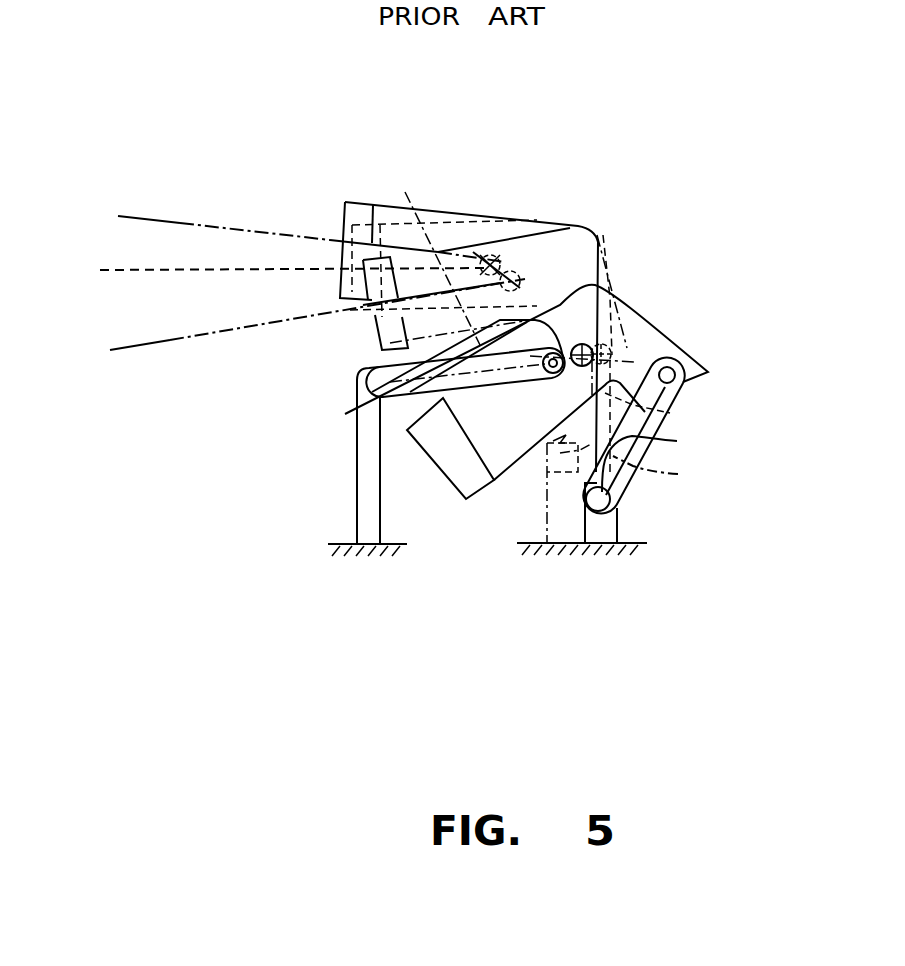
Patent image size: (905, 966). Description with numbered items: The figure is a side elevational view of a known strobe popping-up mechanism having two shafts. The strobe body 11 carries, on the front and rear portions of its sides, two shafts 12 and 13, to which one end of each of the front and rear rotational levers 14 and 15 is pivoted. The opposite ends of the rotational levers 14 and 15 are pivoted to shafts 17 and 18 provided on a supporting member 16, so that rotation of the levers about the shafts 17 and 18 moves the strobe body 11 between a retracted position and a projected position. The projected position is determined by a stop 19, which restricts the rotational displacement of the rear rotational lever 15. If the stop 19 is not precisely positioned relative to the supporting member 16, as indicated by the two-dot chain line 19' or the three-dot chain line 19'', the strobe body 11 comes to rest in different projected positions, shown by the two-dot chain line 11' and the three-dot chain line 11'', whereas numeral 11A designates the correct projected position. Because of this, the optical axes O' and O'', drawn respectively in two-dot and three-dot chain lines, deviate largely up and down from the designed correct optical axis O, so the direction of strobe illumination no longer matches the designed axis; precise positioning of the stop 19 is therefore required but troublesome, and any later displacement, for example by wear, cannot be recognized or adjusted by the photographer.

The designed correct optical axis O is at (295, 293).
The optical axis (two-dot chain line) O' is at (311, 200).
The optical axis (three-dot chain line) O'' is at (317, 343).
The strobe body 11 is at (504, 406).
The strobe body position (two-dot chain line) 11' is at (486, 306).
The correct projected position 11A is at (510, 218).
The strobe body position (three-dot chain line) 11'' is at (526, 338).
The shaft 12 is at (543, 378).
The shaft 13 is at (697, 374).
The front rotational lever 14 is at (409, 452).
The rear rotational lever 15 is at (662, 411).
The supporting member 16 is at (352, 553).
The shaft 17 is at (372, 394).
The shaft 18 is at (617, 512).
The stop 19 is at (654, 462).
The stop position (two-dot chain line) 19' is at (663, 472).
The stop position (three-dot chain line) 19'' is at (547, 521).